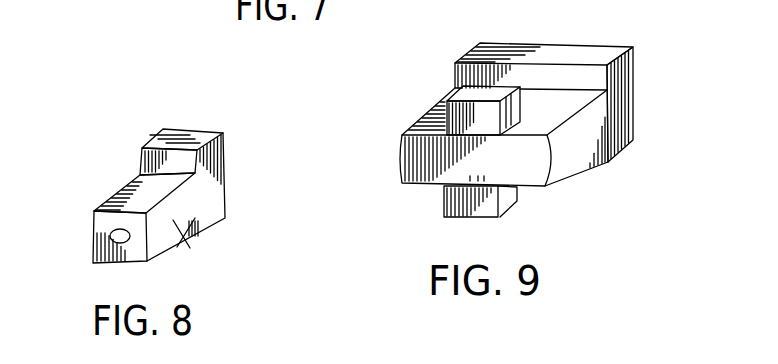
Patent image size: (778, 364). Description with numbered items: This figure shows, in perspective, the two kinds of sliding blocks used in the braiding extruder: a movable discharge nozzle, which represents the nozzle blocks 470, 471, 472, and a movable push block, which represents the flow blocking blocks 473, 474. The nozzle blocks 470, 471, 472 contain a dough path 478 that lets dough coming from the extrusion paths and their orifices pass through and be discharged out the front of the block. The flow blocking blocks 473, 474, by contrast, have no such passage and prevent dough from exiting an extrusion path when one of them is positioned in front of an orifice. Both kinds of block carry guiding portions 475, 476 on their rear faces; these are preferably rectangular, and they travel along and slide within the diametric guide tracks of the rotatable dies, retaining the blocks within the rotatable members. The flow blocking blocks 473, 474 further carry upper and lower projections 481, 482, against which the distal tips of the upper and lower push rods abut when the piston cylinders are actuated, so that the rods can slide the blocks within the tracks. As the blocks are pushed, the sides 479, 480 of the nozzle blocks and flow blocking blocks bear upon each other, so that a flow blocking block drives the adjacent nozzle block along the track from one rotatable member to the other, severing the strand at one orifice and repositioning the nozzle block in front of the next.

In FIG. 8, the nozzle block 470 is at (198, 172).
In FIG. 8, the nozzle block 471 is at (198, 172).
In FIG. 8, the nozzle block 472 is at (198, 172).
In FIG. 8, the guiding portion 475 is at (216, 167).
In FIG. 8, the dough path 478 is at (116, 234).
In FIG. 8, the side of the block 479 is at (184, 240).
In FIG. 9, the flow blocking block 473 is at (521, 124).
In FIG. 9, the flow blocking block 474 is at (521, 124).
In FIG. 9, the guiding portion 476 is at (623, 97).
In FIG. 9, the side of the block 480 is at (397, 152).
In FIG. 9, the upper projection 481 is at (455, 120).
In FIG. 9, the lower projection 482 is at (477, 203).